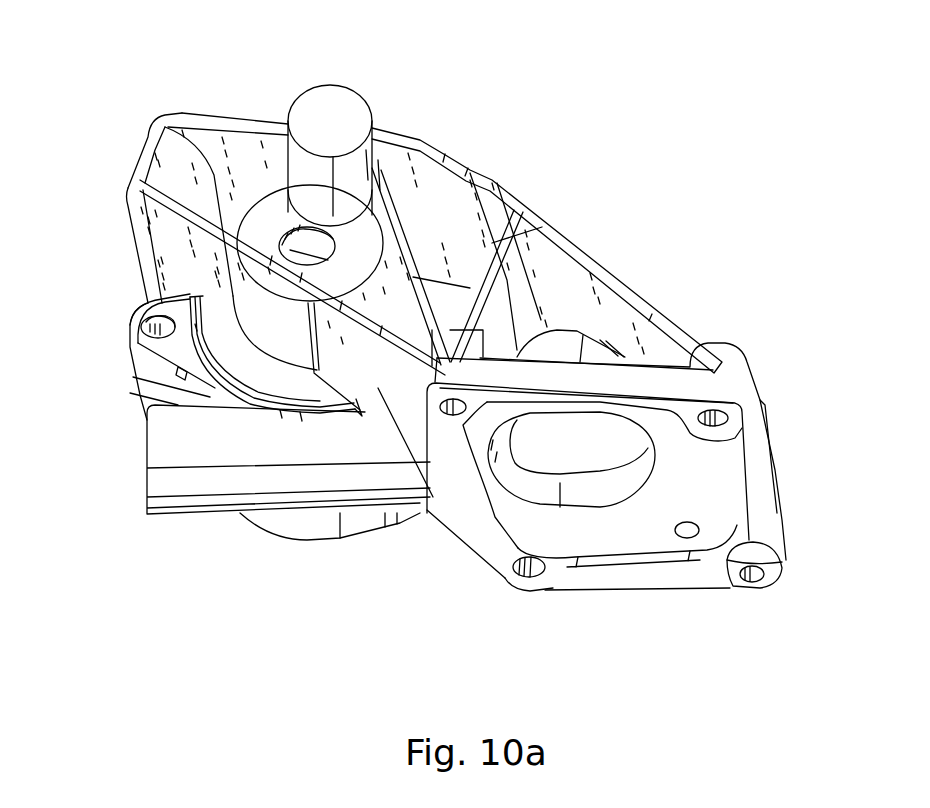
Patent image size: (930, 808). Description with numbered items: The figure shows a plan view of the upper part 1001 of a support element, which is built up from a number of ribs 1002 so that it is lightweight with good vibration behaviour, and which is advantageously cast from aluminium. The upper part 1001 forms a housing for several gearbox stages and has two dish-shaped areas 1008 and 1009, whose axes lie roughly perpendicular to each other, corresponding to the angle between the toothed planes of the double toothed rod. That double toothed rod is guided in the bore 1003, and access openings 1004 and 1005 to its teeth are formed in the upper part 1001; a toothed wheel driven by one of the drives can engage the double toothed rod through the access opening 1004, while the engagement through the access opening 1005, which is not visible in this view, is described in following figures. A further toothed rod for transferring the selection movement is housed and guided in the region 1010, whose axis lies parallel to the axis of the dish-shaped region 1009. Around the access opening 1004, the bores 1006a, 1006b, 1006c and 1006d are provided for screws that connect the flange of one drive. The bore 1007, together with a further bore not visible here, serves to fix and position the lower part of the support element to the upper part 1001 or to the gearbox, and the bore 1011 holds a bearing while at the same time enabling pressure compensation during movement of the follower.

The upper part of the support element 1001 is at (271, 575).
The ribs 1002 is at (393, 185).
The bore 1003 is at (138, 465).
The access opening 1004 is at (587, 462).
The access opening 1005 is at (322, 548).
The bore 1006a is at (452, 415).
The bore 1006b is at (531, 577).
The bore 1006c is at (753, 582).
The bore 1006d is at (713, 425).
The bore 1007 is at (152, 330).
The dish-shaped area 1008 is at (583, 335).
The dish-shaped area 1009 is at (210, 313).
The region / bore for the toothed rod 1010 is at (338, 103).
The bore 1011 is at (297, 226).